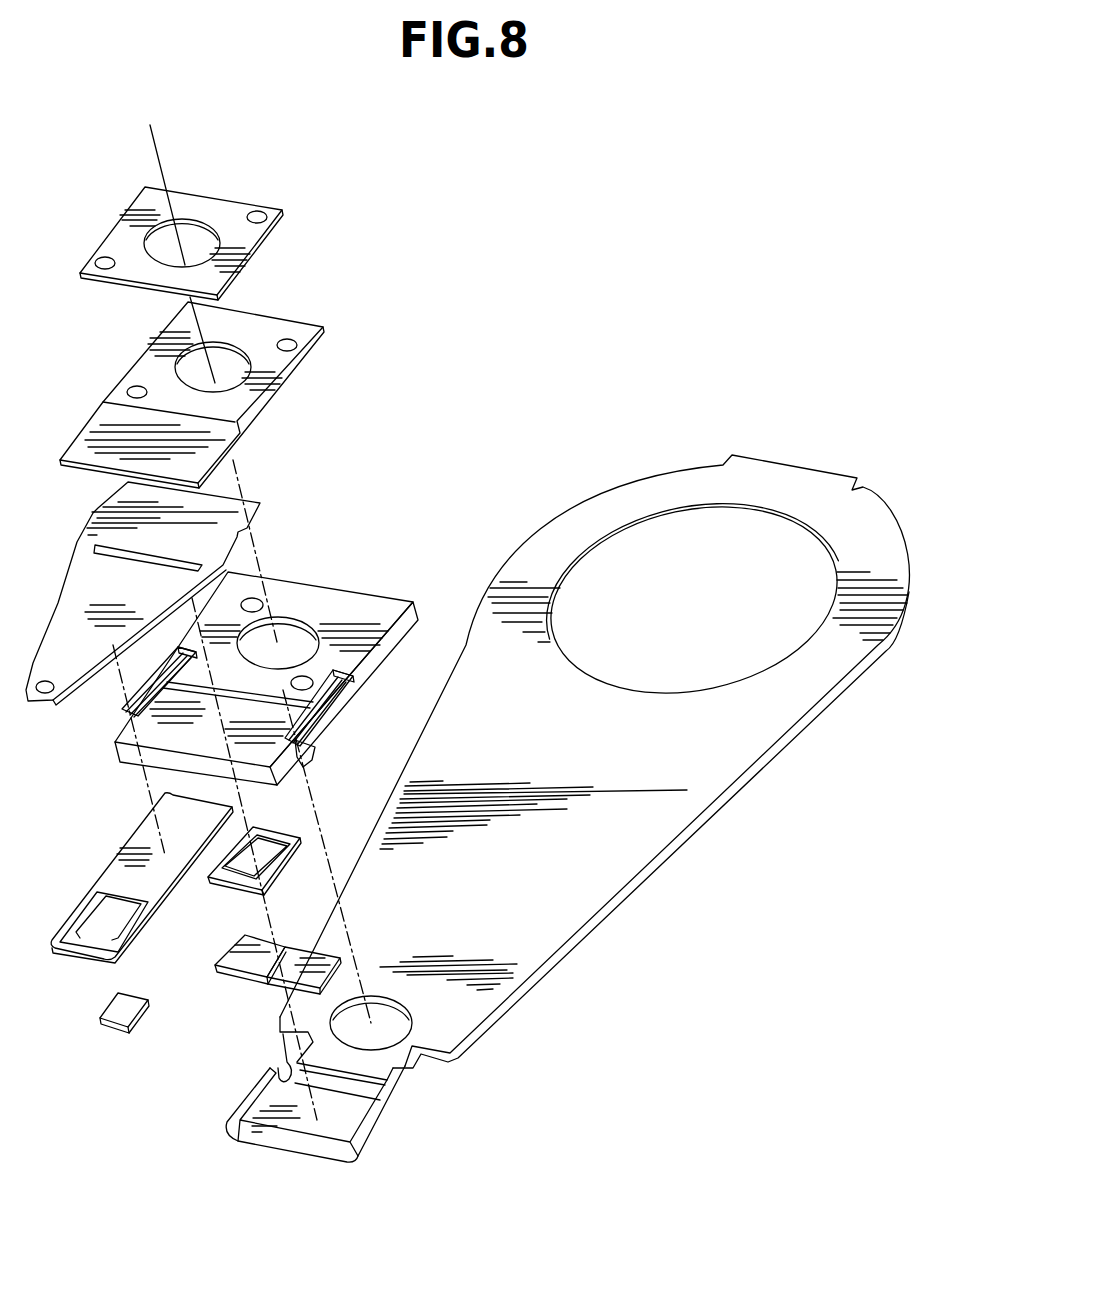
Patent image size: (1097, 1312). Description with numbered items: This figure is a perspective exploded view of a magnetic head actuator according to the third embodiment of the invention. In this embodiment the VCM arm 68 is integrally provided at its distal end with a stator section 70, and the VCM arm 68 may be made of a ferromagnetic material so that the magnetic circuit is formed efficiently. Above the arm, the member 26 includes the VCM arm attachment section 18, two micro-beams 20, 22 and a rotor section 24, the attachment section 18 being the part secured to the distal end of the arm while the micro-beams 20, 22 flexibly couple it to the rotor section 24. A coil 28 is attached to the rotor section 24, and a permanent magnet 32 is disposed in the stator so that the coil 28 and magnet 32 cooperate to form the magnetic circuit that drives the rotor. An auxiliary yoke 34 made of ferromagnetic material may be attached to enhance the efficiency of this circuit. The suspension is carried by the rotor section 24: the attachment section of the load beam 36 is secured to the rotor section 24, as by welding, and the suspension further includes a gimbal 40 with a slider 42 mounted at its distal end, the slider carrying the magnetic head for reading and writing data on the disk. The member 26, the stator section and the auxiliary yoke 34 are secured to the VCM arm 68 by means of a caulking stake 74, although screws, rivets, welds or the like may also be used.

The attachment section 18 is at (297, 598).
The micro-beam 20 is at (130, 710).
The micro-beam 22 is at (313, 753).
The rotor section 24 is at (185, 732).
The member 26 is at (235, 661).
The coil 28 is at (230, 893).
The permanent magnet 32 is at (240, 985).
The auxiliary yoke 34 is at (273, 317).
The load beam 36 is at (247, 500).
The gimbal 40 is at (107, 885).
The slider 42 is at (108, 1030).
The VCM arm 68 is at (567, 808).
The stator section 70 is at (338, 1130).
The caulking stake 74 is at (213, 200).